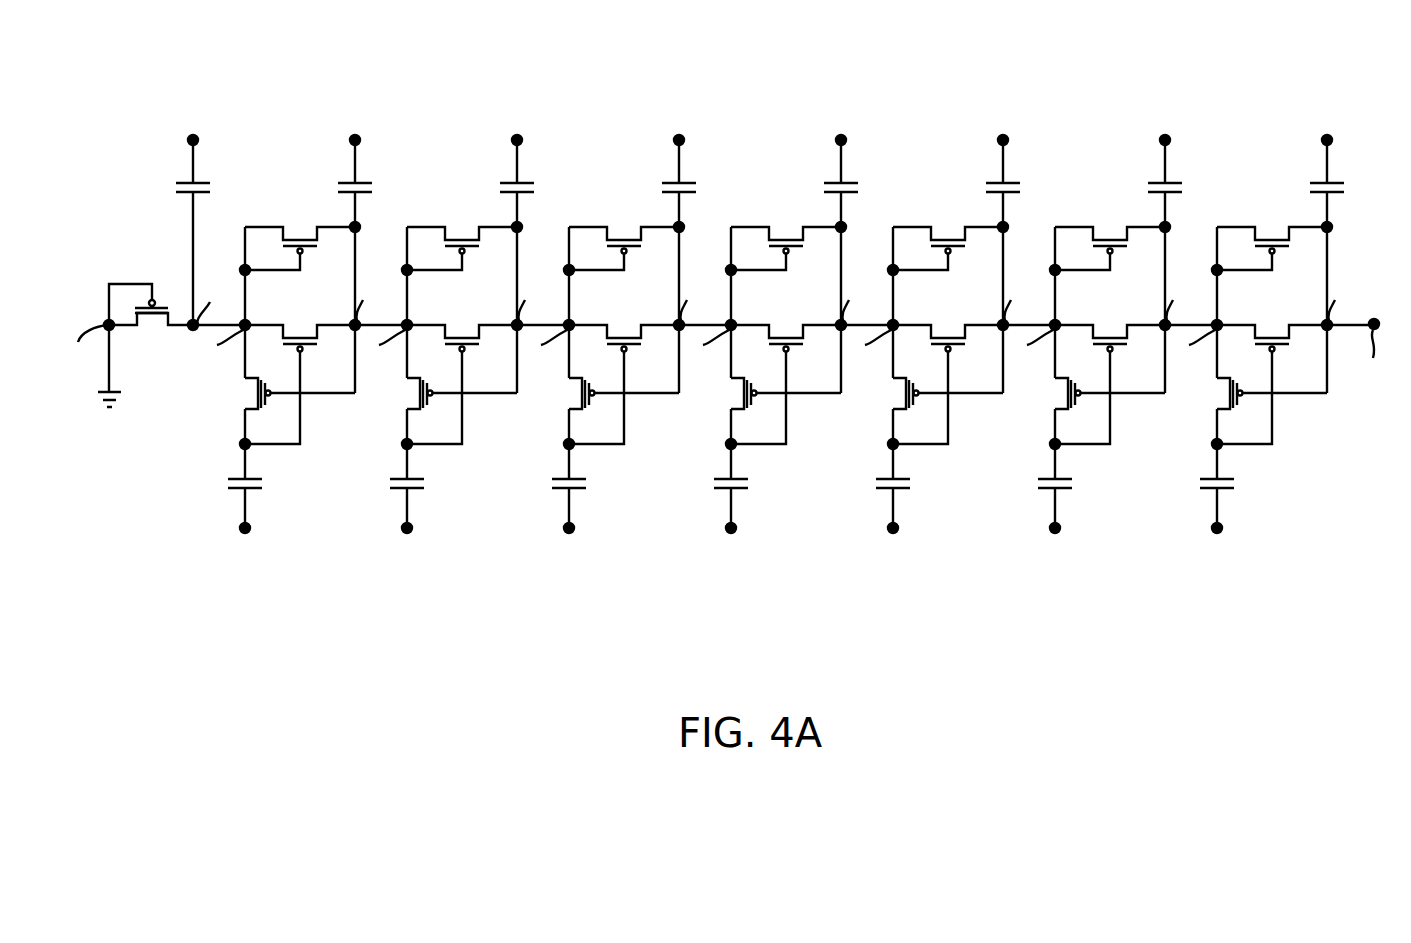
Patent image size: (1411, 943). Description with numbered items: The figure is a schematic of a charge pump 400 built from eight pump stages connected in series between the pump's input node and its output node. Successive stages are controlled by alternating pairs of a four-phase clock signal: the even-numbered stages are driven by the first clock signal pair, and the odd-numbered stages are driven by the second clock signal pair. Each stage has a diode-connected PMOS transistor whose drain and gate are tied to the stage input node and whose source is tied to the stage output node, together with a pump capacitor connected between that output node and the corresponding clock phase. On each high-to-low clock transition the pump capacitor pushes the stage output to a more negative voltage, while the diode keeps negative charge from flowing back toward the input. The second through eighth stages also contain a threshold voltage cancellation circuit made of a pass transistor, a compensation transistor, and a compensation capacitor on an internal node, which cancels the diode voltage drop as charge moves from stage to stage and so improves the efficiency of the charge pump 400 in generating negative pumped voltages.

The charge pump 400 is at (266, 608).